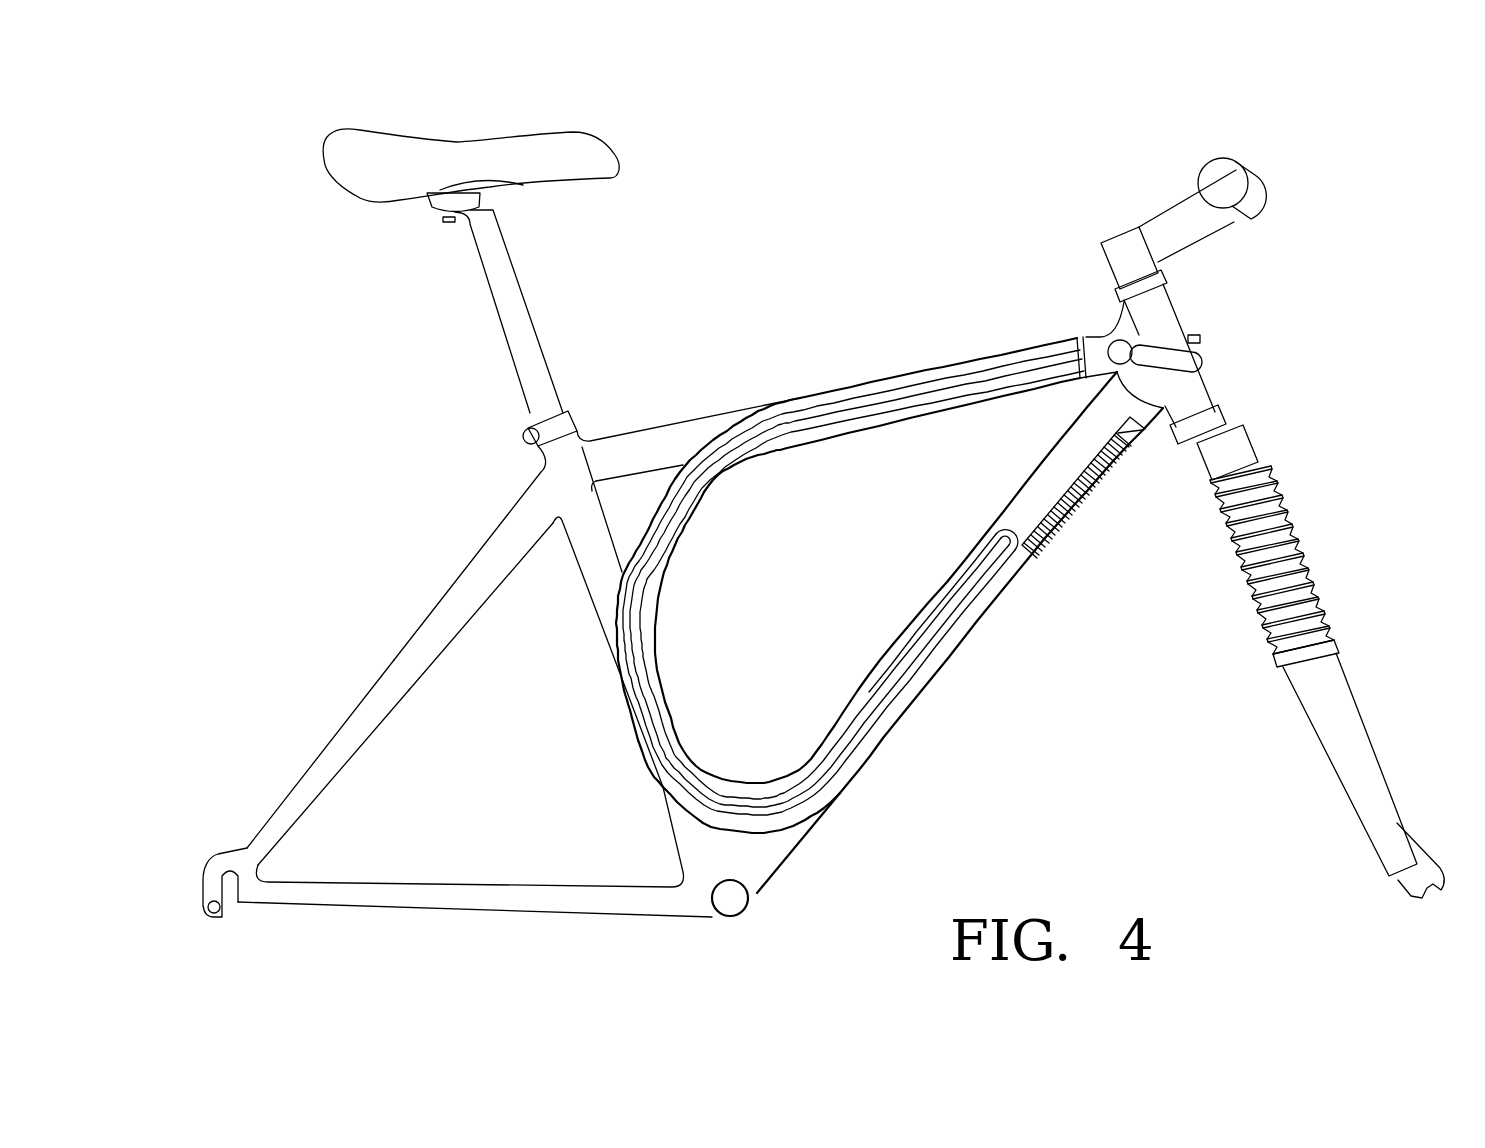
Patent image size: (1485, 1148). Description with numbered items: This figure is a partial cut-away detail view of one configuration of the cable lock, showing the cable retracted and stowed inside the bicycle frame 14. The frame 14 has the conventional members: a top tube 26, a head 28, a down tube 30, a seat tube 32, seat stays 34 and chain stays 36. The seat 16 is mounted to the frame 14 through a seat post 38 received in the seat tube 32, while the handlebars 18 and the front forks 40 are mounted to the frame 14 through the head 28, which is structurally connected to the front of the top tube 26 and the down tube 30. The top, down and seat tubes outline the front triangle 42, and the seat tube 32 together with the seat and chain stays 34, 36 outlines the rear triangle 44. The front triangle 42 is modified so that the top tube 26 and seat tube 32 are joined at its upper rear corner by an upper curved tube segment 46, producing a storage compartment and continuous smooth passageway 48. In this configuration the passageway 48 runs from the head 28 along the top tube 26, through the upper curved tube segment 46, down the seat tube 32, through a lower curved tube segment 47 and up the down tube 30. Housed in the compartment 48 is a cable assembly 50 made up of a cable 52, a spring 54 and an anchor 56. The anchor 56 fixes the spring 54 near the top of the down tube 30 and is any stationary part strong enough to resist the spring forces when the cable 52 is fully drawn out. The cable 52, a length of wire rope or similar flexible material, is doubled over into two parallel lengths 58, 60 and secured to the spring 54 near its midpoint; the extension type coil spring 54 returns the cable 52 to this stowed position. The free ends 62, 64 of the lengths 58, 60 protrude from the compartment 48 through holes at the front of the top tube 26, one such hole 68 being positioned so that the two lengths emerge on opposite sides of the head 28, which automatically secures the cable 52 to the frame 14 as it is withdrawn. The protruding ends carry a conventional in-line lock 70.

The frame 14 is at (404, 467).
The seat 16 is at (452, 146).
The handlebars 18 is at (1258, 200).
The top tube 26 is at (637, 430).
The head 28 is at (1172, 306).
The down tube 30 is at (915, 707).
The seat tube 32 is at (591, 603).
The seat stays 34 is at (407, 640).
The chain stays 36 is at (511, 887).
The seat post 38 is at (531, 300).
The front forks 40 is at (1334, 762).
The front triangle 42 is at (704, 734).
The rear triangle 44 is at (380, 748).
The upper curved tube segment 46 is at (654, 506).
The lower curved tube segment 47 is at (740, 833).
The storage compartment and passageway 48 is at (988, 398).
The cable assembly 50 is at (1018, 516).
The cable 52 is at (937, 610).
The spring 54 is at (1070, 512).
The anchor 56 is at (1123, 440).
The first cable length 58 is at (826, 422).
The second cable length 60 is at (898, 390).
The free end 62 is at (1203, 337).
The free end 64 is at (1132, 360).
The hole 68 is at (1108, 336).
The in-line lock 70 is at (1200, 368).